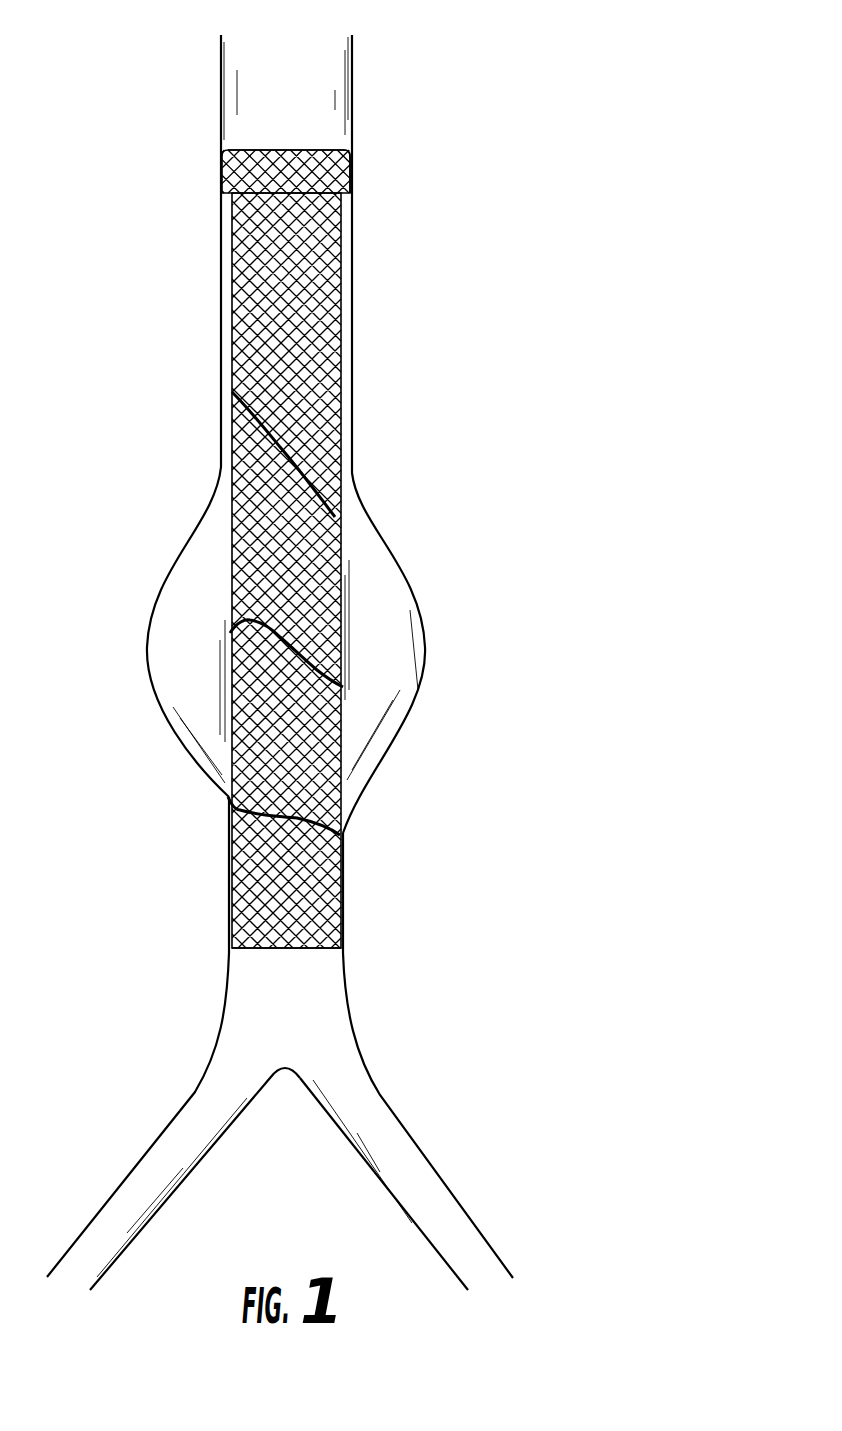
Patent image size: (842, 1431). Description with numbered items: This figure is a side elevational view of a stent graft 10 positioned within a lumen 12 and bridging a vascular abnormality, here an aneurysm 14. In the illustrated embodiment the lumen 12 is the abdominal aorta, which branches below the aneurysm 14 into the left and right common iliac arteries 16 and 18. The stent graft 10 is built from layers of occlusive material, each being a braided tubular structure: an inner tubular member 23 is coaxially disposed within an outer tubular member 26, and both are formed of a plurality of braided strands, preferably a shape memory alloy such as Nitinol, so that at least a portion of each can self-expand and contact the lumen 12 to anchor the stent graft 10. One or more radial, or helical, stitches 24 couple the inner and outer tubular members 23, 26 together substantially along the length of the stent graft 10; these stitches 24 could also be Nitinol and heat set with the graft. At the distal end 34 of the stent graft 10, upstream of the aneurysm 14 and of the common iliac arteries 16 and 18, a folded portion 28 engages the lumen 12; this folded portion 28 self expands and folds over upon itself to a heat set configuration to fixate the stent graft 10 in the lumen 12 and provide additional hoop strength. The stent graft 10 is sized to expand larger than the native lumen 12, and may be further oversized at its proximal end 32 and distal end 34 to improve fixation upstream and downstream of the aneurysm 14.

The stent graft 10 is at (292, 858).
The lumen 12 is at (232, 95).
The aneurysm 14 is at (422, 677).
The left common iliac artery 16 is at (130, 1173).
The right common iliac artery 18 is at (425, 1158).
The inner tubular member 23 is at (277, 152).
The radial stitches 24 is at (245, 413).
The outer tubular member 26 is at (320, 605).
The folded portion 28 is at (242, 165).
The proximal end 32 is at (322, 952).
The distal end 34 is at (310, 150).